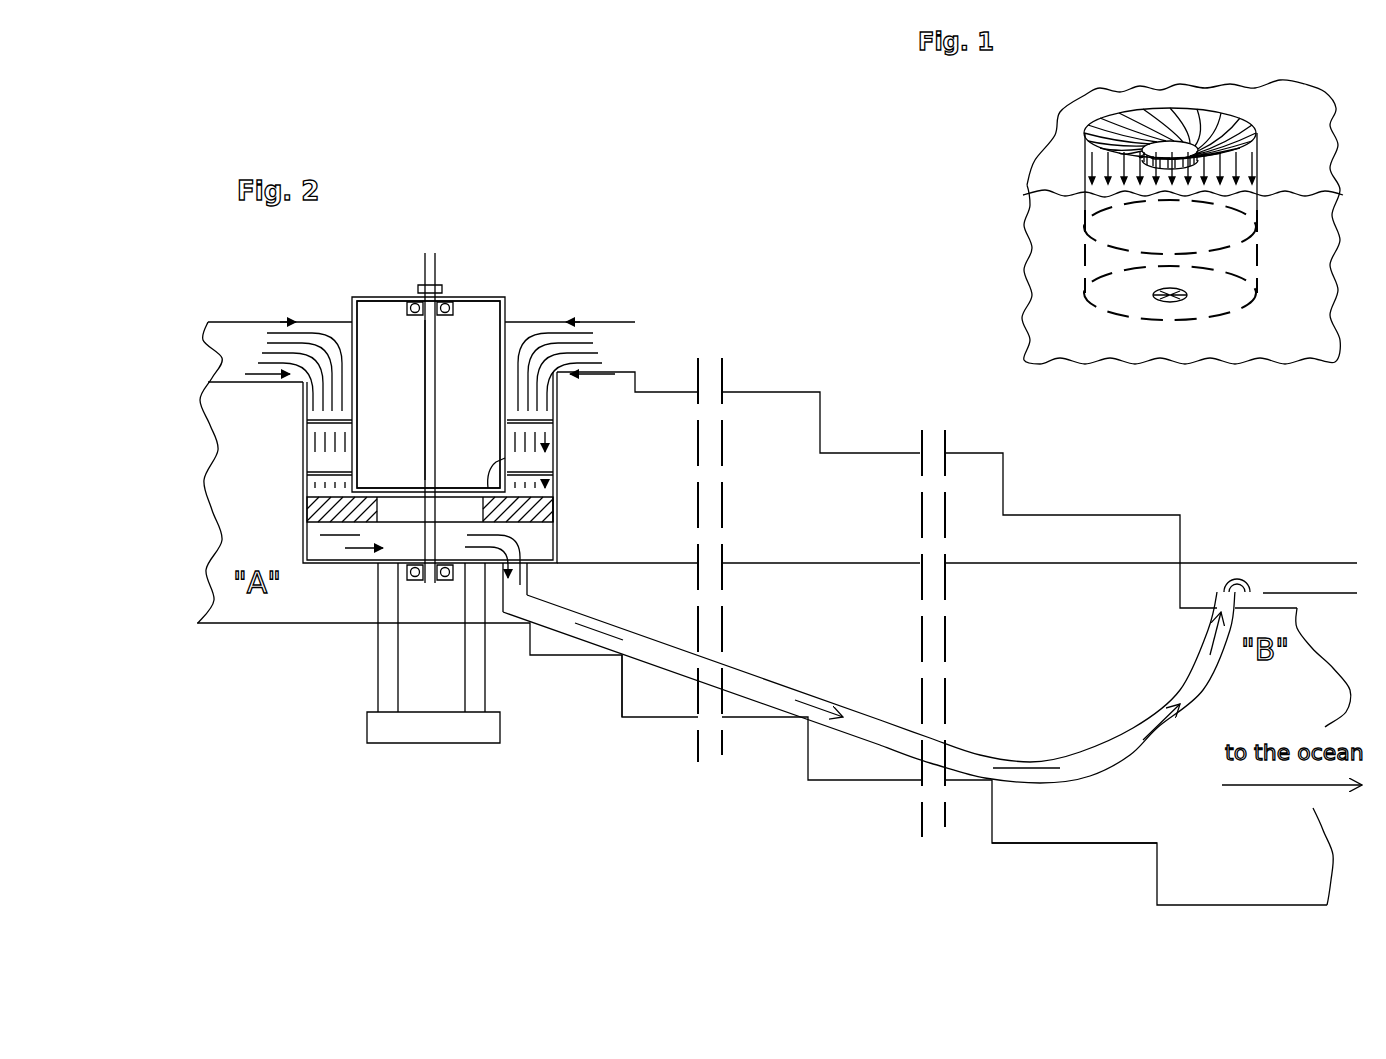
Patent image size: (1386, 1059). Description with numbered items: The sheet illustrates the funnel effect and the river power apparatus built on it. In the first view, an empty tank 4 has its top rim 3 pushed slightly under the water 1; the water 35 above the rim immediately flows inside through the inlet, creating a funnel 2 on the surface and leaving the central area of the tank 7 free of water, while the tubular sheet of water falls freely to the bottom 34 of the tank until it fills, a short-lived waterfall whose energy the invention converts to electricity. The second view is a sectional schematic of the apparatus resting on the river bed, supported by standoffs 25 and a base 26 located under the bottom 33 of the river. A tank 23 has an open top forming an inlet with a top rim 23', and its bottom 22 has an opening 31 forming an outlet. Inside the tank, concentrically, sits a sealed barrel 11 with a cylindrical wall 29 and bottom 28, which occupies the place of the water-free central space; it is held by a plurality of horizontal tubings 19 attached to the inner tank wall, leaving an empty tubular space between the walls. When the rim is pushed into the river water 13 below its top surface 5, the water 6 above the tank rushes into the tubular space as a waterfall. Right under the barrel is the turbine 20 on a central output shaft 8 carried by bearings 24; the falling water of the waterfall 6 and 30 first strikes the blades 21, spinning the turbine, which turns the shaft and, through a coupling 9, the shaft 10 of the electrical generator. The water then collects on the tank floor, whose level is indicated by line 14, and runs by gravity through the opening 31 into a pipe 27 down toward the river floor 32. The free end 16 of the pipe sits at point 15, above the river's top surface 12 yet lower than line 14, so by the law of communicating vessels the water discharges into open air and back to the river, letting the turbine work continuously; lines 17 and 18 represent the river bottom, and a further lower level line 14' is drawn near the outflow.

In FIG. 1, the water 1 is at (1298, 104).
In FIG. 1, the funnel 2 is at (1176, 98).
In FIG. 1, the top rim 3 is at (1258, 222).
In FIG. 1, the empty tank 4 is at (1086, 256).
In FIG. 1, the central area of the tank 7 is at (1128, 90).
In FIG. 1, the bottom of the tank 34 is at (1244, 303).
In FIG. 1, the water above the rim 35 is at (1088, 172).
In FIG. 2, the top surface 5 is at (594, 318).
In FIG. 2, the water above the tank / waterfall 6 is at (340, 316).
In FIG. 2, the central output shaft 8 is at (412, 322).
In FIG. 2, the coupling 9 is at (414, 300).
In FIG. 2, the shaft of the electrical generator 10 is at (436, 256).
In FIG. 2, the sealed barrel 11 is at (470, 294).
In FIG. 2, the top surface of a river 12 is at (738, 390).
In FIG. 2, the water 13 is at (800, 432).
In FIG. 2, the line indicating level of tank bottom 14 is at (957, 539).
In FIG. 2, the lower water level 14' is at (1318, 618).
In FIG. 2, the point 15 is at (1220, 582).
In FIG. 2, the free end of pipe 16 is at (1213, 594).
In FIG. 2, the bottom of the river 17 is at (1068, 844).
In FIG. 2, the bottom of the river 18 is at (638, 720).
In FIG. 2, the horizontal tubings 19 is at (306, 444).
In FIG. 2, the turbine 20 is at (306, 512).
In FIG. 2, the blades 21 is at (556, 510).
In FIG. 2, the bottom of the tank 22 is at (314, 562).
In FIG. 2, the tank 23 is at (280, 370).
In FIG. 2, the top rim 23' is at (907, 470).
In FIG. 2, the bearings 24 is at (448, 570).
In FIG. 2, the standoffs 25 is at (378, 692).
In FIG. 2, the base 26 is at (420, 743).
In FIG. 2, the pipe 27 is at (550, 600).
In FIG. 2, the bottom of barrel 28 is at (556, 456).
In FIG. 2, the cylindrical wall of barrel 29 is at (508, 310).
In FIG. 2, the waterfall 30 is at (556, 484).
In FIG. 2, the opening / outlet 31 is at (556, 546).
In FIG. 2, the river floor 32 is at (988, 784).
In FIG. 2, the bottom of the river 33 is at (296, 624).